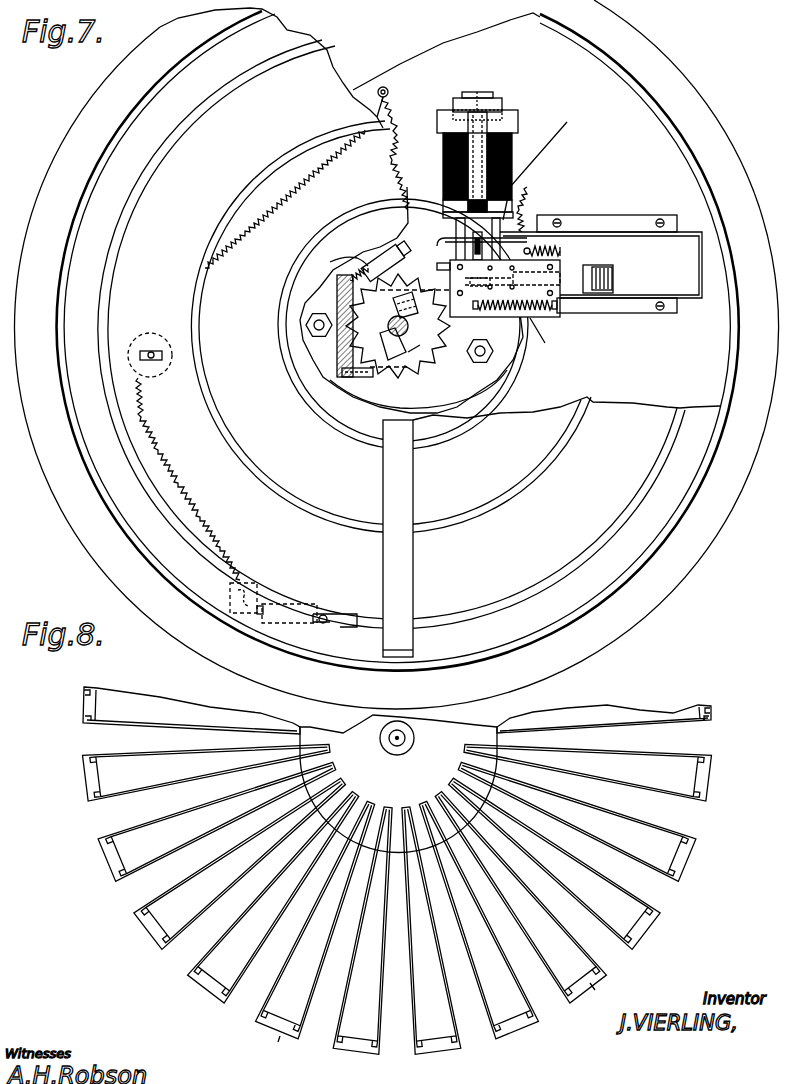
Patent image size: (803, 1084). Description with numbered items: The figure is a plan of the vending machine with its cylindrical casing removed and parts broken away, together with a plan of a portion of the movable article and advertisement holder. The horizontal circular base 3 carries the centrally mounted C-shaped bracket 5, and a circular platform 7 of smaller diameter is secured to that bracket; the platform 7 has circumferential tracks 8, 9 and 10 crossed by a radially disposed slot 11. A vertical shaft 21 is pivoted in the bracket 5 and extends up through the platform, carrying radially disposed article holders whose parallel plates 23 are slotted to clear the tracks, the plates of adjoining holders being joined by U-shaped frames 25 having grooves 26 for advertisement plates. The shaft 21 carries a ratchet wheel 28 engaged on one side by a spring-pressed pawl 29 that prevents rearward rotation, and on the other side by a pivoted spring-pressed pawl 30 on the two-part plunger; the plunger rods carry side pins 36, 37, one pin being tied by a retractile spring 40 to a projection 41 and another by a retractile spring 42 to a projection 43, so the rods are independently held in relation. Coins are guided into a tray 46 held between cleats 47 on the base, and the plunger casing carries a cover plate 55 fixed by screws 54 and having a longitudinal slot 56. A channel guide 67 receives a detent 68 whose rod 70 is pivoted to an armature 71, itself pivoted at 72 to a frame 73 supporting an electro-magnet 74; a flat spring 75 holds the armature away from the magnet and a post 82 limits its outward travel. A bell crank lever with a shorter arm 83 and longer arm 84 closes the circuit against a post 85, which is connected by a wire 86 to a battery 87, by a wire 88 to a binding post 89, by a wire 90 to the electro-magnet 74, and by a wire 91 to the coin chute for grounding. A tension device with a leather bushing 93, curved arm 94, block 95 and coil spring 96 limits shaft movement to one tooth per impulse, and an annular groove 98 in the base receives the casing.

In FIG. 7, the circular base 3 is at (745, 458).
In FIG. 7, the C-shaped bracket 5 is at (325, 367).
In FIG. 7, the circular platform 7 is at (566, 465).
In FIG. 7, the track 8 is at (460, 616).
In FIG. 7, the track 9 is at (450, 522).
In FIG. 7, the track 10 is at (462, 430).
In FIG. 7, the radially disposed slot 11 is at (398, 538).
In FIG. 7, the vertical shaft 21 is at (415, 378).
In FIG. 8, the vertical shaft 21 is at (405, 746).
In FIG. 8, the plates 23 is at (590, 864).
In FIG. 8, the U-shaped frames 25 is at (441, 1019).
In FIG. 8, the grooves 26 is at (683, 862).
In FIG. 7, the ratchet wheel 28 is at (399, 341).
In FIG. 7, the spring-pressed pawl 29 is at (365, 378).
In FIG. 7, the pivoted spring-pressed pawl 30 is at (445, 270).
In FIG. 7, the side pins 36 is at (530, 245).
In FIG. 7, the side pins 37 is at (480, 318).
In FIG. 7, the retractile spring 40 is at (548, 248).
In FIG. 7, the projection 41 is at (565, 250).
In FIG. 7, the retractile spring 42 is at (481, 339).
In FIG. 7, the projection 43 is at (560, 318).
In FIG. 7, the tray 46 is at (601, 265).
In FIG. 7, the cleats 47 is at (632, 215).
In FIG. 7, the screws 54 is at (595, 265).
In FIG. 7, the cover plate 55 is at (600, 296).
In FIG. 7, the longitudinal slot 56 is at (512, 372).
In FIG. 7, the channel guide 67 is at (528, 187).
In FIG. 7, the detent 68 is at (440, 190).
In FIG. 7, the rod 70 is at (478, 92).
In FIG. 7, the armature 71 is at (460, 97).
In FIG. 7, the pivot 72 is at (495, 112).
In FIG. 7, the frame 73 is at (444, 125).
In FIG. 7, the electro-magnet 74 is at (452, 162).
In FIG. 7, the flat spring 75 is at (515, 135).
In FIG. 7, the post 82 is at (490, 92).
In FIG. 7, the shorter arm 83 is at (345, 614).
In FIG. 7, the longer arm 84 is at (284, 604).
In FIG. 7, the post 85 is at (258, 584).
In FIG. 7, the wire 86 is at (182, 478).
In FIG. 7, the battery 87 is at (163, 372).
In FIG. 7, the wire 88 is at (276, 212).
In FIG. 7, the binding post 89 is at (390, 88).
In FIG. 7, the wire 90 is at (388, 117).
In FIG. 7, the wire 91 is at (544, 165).
In FIG. 7, the leather bushing 93 is at (390, 318).
In FIG. 7, the curved arm 94 is at (386, 252).
In FIG. 7, the block 95 is at (364, 262).
In FIG. 7, the coil spring 96 is at (338, 261).
In FIG. 7, the annular groove 98 is at (86, 456).